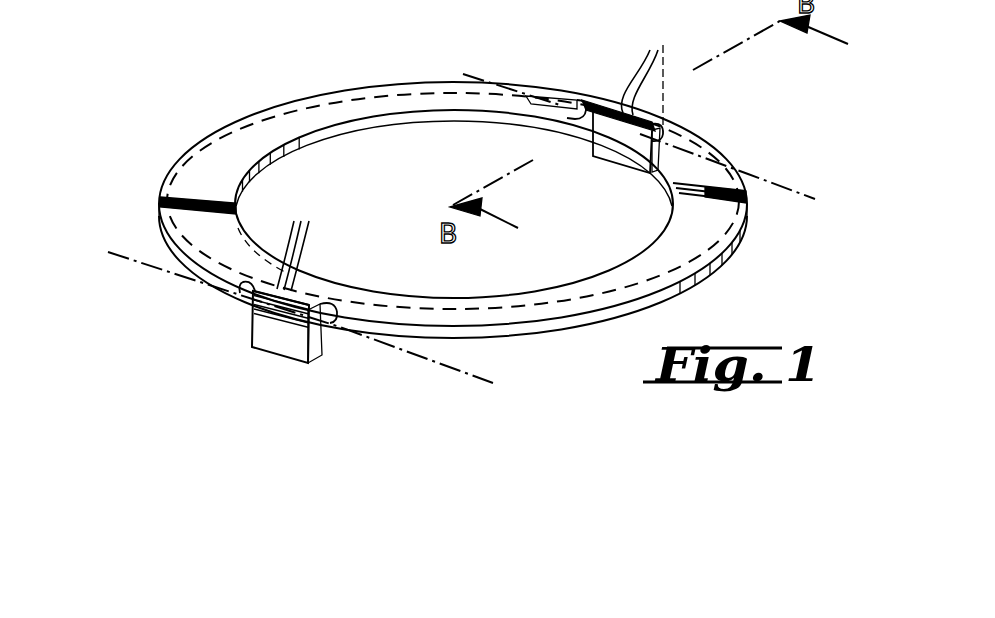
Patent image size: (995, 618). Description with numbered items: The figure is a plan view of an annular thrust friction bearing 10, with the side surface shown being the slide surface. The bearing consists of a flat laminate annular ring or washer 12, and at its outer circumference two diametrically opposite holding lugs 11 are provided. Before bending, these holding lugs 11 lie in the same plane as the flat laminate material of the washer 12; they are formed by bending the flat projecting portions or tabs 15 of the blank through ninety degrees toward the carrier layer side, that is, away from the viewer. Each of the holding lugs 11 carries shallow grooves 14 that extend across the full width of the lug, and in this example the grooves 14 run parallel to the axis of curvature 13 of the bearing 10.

The annular thrust friction bearing 10 is at (262, 70).
The holding lugs 11 is at (245, 319).
The annular ring or washer 12 is at (351, 110).
The axis of curvature 13 is at (129, 259).
The shallow grooves 14 is at (472, 154).
The projecting portions or tabs 15 is at (283, 339).